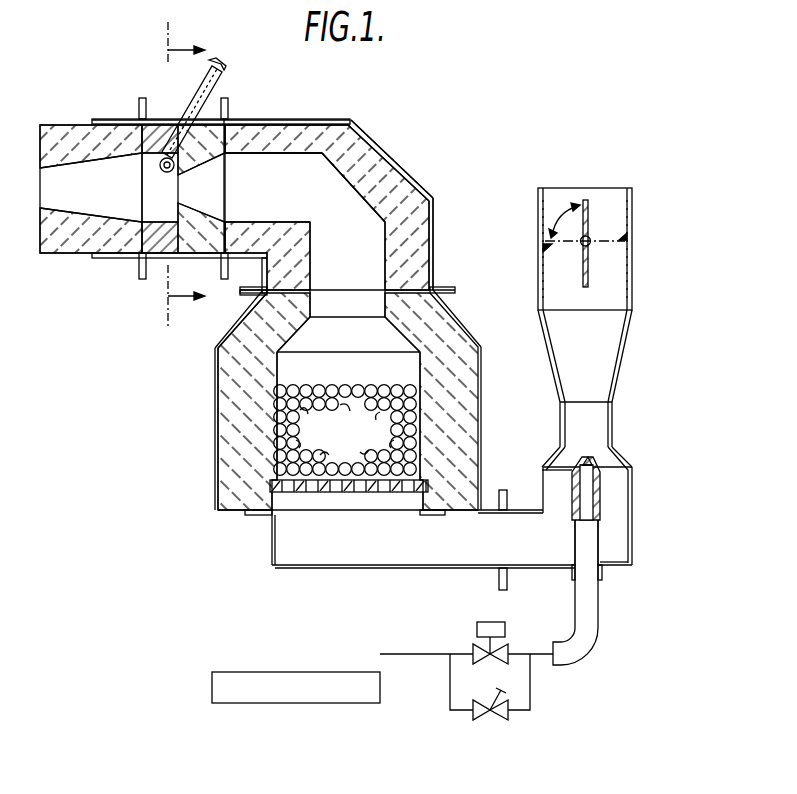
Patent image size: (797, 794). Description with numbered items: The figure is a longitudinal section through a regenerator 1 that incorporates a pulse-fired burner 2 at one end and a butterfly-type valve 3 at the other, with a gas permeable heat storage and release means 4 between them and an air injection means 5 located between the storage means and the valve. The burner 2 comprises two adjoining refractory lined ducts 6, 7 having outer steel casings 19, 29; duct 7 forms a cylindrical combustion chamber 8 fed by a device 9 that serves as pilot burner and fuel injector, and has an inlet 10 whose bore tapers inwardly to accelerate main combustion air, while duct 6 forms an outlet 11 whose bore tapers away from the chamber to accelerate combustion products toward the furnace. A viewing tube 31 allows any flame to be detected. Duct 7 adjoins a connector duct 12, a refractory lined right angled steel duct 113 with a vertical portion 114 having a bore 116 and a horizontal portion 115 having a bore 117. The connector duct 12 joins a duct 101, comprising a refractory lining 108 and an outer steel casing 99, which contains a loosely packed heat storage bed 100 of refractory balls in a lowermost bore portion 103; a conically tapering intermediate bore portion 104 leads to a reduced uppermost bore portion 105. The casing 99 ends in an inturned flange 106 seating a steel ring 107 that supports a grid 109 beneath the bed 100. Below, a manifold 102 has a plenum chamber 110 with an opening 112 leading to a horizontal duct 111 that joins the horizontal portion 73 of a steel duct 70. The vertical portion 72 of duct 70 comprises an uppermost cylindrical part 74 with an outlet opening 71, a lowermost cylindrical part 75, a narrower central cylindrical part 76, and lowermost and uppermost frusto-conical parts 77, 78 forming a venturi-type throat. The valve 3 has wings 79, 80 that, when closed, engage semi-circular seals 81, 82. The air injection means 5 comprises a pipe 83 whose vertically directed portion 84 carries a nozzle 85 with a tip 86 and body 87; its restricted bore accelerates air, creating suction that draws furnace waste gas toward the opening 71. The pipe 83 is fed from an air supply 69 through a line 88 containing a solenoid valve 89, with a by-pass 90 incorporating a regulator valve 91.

The regenerator 1 is at (409, 170).
The pulse-fired burner 2 is at (147, 120).
The butterfly-type valve 3 is at (600, 208).
The gas permeable heat storage and release means 4 is at (276, 460).
The air injection means 5 is at (600, 535).
The refractory lined duct 6 is at (58, 126).
The refractory lined duct 7 is at (173, 124).
The combustion chamber 8 is at (152, 204).
The pilot burner and fuel injector device 9 is at (160, 168).
The inlet 10 is at (216, 180).
The outlet 11 is at (96, 204).
The connector duct 12 is at (353, 132).
The outer steel casing 19 is at (112, 258).
The outer steel casing 29 is at (155, 258).
The viewing tube 31 is at (226, 82).
The air supply 69 is at (380, 690).
The duct 70 is at (620, 362).
The opening 71 is at (562, 196).
The vertical portion 72 is at (624, 333).
The horizontal portion 73 is at (530, 570).
The uppermost cylindrical part 74 is at (630, 297).
The lowermost cylindrical part 75 is at (630, 500).
The central cylindrical part 76 is at (614, 420).
The lowermost frusto-conical part 77 is at (623, 460).
The uppermost frusto-conical part 78 is at (614, 396).
The wing 79 is at (592, 202).
The wing 80 is at (589, 268).
The semi-circular seal 81 is at (548, 250).
The semi-circular seal 82 is at (622, 234).
The pipe 83 is at (598, 612).
The vertically directed portion 84 is at (600, 557).
The nozzle or jet 85 is at (602, 477).
The tip 86 is at (582, 457).
The body 87 is at (570, 498).
The line 88 is at (440, 651).
The solenoid valve 89 is at (501, 622).
The by-pass 90 is at (531, 690).
The regulator valve 91 is at (498, 718).
The outer steel casing 99 is at (217, 348).
The heat storage bed 100 is at (276, 475).
The duct 101 is at (222, 384).
The manifold 102 is at (286, 568).
The lowermost bore portion 103 is at (327, 384).
The intermediate bore portion 104 is at (327, 349).
The uppermost bore portion 105 is at (333, 300).
The inturned flange 106 is at (437, 512).
The steel ring 107 is at (258, 513).
The refractory lining 108 is at (230, 420).
The grid 109 is at (336, 494).
The plenum chamber 110 is at (338, 558).
The horizontal duct 111 is at (462, 557).
The opening 112 is at (380, 494).
The right angled steel duct 113 is at (432, 165).
The vertical portion 114 is at (425, 228).
The horizontal portion 115 is at (264, 133).
The bore 116 is at (414, 196).
The bore 117 is at (293, 162).